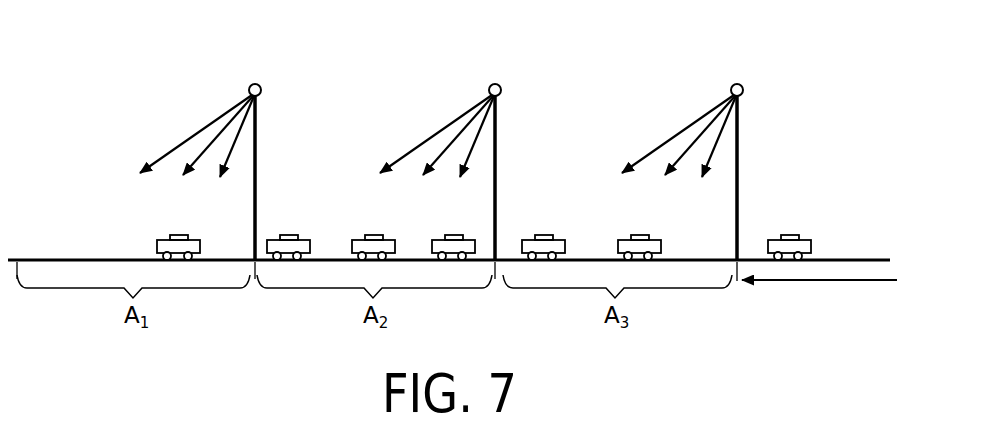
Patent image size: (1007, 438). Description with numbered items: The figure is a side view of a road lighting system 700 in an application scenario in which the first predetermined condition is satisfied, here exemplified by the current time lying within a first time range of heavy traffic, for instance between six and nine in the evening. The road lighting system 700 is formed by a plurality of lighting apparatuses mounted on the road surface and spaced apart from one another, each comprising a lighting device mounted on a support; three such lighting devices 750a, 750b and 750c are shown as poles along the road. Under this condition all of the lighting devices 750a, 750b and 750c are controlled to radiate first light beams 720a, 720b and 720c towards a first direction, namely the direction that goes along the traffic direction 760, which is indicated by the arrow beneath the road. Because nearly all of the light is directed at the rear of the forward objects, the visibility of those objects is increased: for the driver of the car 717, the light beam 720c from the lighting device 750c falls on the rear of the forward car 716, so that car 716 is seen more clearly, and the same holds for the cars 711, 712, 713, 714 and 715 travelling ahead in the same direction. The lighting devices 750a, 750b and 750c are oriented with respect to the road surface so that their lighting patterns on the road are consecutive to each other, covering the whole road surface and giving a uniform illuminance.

The road lighting system 700 is at (790, 62).
The car 711 is at (178, 235).
The car 712 is at (290, 235).
The car 713 is at (375, 235).
The car 714 is at (455, 235).
The car 715 is at (545, 235).
The car 716 is at (641, 235).
The car 717 is at (791, 235).
The first light beam 720a is at (182, 138).
The first light beam 720b is at (422, 138).
The first light beam 720c is at (664, 138).
The lighting device 750a is at (257, 84).
The lighting device 750b is at (497, 84).
The lighting device 750c is at (739, 84).
The traffic direction 760 is at (832, 283).